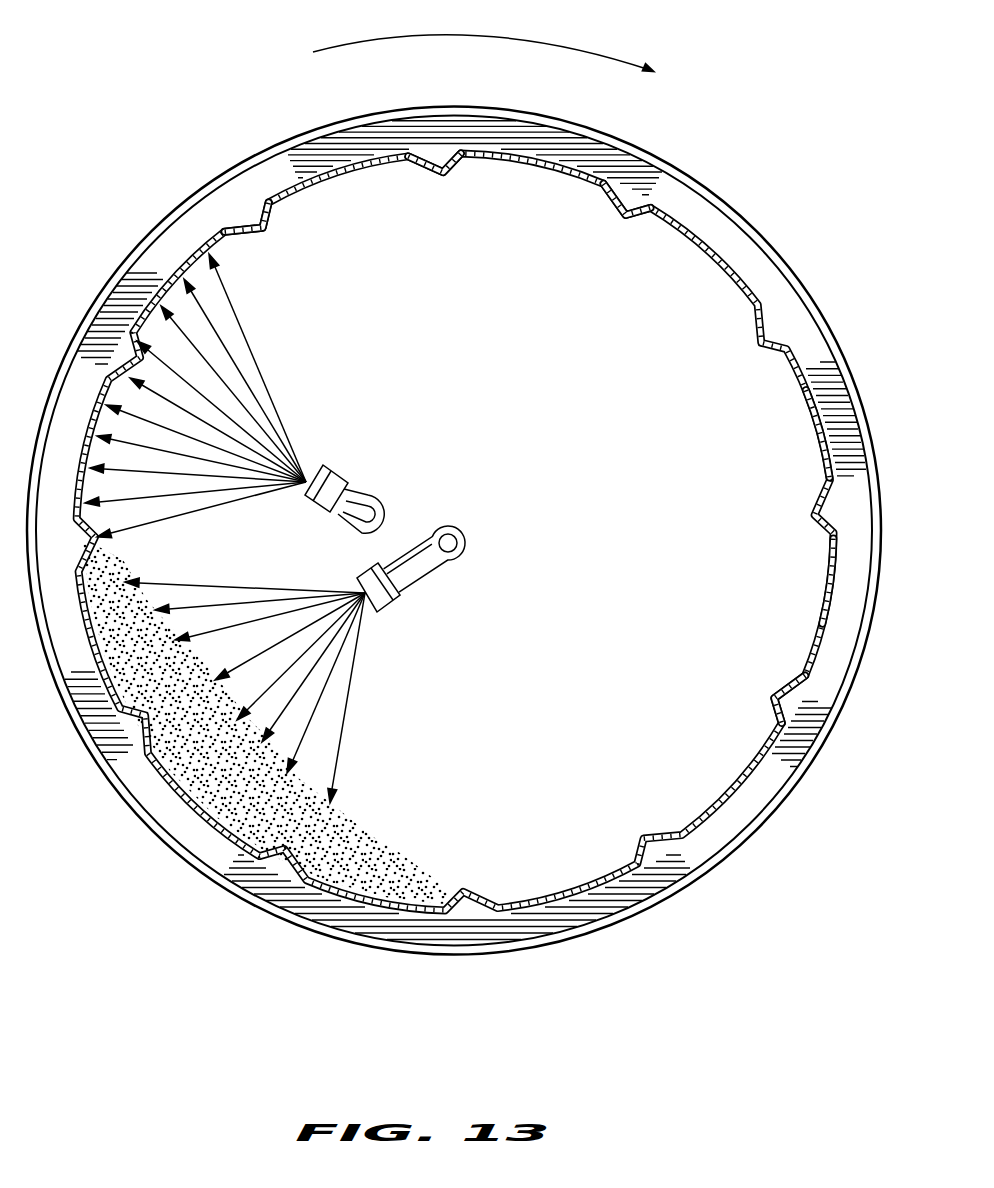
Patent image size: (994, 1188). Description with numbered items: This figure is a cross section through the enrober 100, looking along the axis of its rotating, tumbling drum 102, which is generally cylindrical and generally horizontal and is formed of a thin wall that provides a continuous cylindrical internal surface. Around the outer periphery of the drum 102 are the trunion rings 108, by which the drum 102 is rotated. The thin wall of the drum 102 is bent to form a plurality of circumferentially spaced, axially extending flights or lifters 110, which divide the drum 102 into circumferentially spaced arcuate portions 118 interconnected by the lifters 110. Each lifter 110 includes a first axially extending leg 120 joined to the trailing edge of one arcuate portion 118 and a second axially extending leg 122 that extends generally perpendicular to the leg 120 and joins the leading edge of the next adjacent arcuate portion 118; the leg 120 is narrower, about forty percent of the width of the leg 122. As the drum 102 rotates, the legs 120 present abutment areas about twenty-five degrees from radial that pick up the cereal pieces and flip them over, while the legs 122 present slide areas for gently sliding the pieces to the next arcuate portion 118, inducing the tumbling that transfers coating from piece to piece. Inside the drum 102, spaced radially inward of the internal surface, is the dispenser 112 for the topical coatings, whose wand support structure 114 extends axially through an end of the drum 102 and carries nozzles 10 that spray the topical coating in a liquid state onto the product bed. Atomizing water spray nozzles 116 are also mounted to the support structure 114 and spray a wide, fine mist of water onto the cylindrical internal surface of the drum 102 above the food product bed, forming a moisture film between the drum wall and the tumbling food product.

The nozzles 10 is at (390, 610).
The enrober 100 is at (653, 140).
The drum 102 is at (718, 250).
The trunion rings 108 is at (382, 110).
The lifters 110 is at (762, 692).
The dispenser 112 is at (383, 618).
The wand support structure 114 is at (470, 543).
The atomizing water spray nozzles 116 is at (341, 470).
The arcuate portions 118 is at (828, 578).
The first axially extending leg 120 is at (634, 223).
The second axially extending leg 122 is at (263, 229).